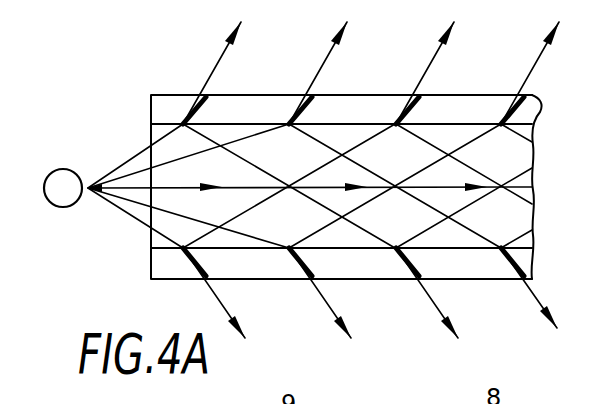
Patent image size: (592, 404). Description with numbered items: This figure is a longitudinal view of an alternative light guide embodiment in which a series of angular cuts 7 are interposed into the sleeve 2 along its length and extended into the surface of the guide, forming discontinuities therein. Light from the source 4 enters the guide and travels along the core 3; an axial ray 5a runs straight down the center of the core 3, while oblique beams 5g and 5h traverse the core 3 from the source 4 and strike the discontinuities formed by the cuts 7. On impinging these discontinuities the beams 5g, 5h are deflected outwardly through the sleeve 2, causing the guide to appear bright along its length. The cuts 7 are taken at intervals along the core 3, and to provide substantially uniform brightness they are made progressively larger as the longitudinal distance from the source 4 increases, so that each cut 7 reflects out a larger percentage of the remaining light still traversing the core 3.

The sleeve 2 is at (545, 108).
The core 3 is at (528, 143).
The source 4 is at (63, 207).
The axial light ray 5a is at (186, 187).
The beam 5g is at (140, 152).
The beam 5h is at (140, 157).
The angular cut 7 is at (208, 100).